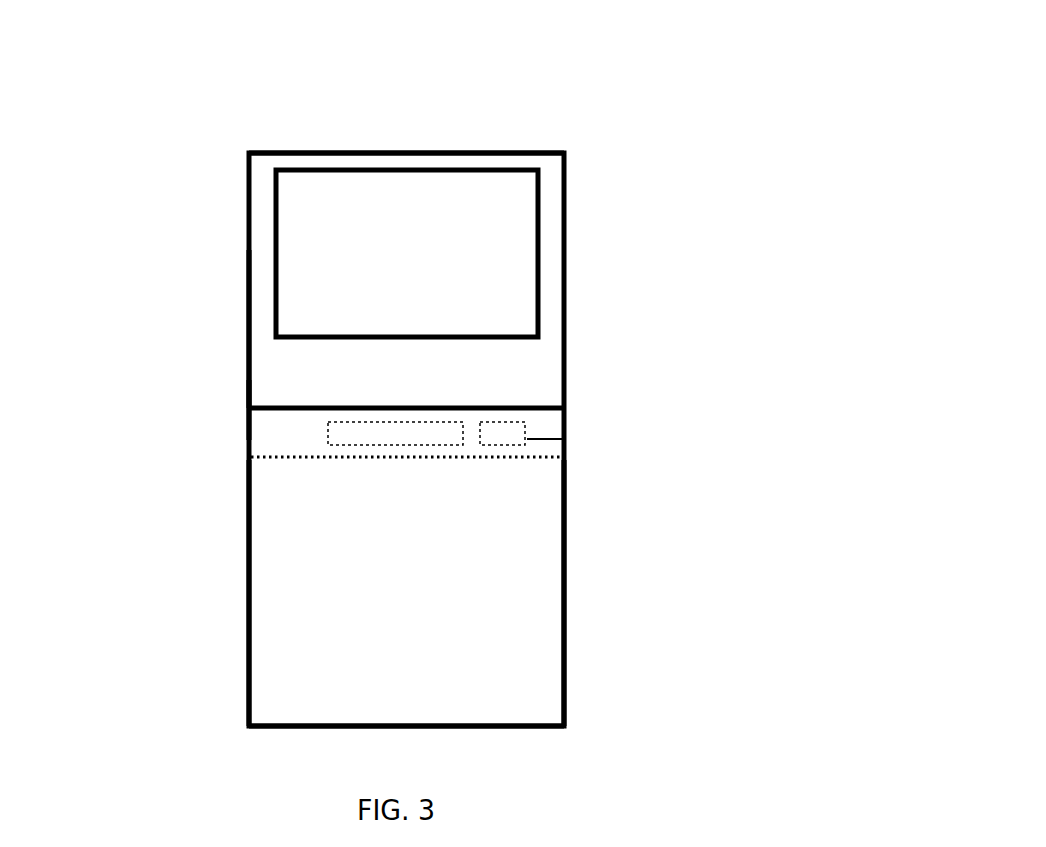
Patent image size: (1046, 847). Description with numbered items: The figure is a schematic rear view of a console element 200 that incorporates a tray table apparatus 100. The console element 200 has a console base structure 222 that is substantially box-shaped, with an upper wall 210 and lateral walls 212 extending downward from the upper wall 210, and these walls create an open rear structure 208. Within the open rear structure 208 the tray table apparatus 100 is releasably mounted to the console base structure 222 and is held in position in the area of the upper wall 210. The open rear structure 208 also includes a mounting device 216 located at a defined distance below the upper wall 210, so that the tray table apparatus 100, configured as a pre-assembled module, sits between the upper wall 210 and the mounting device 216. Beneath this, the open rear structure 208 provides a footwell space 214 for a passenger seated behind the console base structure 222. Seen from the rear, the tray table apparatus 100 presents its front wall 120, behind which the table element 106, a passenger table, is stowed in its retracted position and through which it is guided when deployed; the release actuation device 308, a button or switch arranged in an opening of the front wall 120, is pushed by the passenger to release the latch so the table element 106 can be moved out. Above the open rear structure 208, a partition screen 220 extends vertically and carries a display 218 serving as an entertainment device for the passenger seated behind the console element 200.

The console element 200 is at (207, 92).
The tray table apparatus 100 is at (226, 407).
The table element 106 is at (345, 432).
The front wall 120 is at (552, 439).
The open rear structure 208 is at (544, 556).
The upper wall 210 is at (525, 408).
The lateral walls 212 is at (248, 633).
The footwell space 214 is at (465, 633).
The mounting device 216 is at (229, 471).
The display 218 is at (502, 204).
The partition screen 220 is at (557, 265).
The console base structure 222 is at (221, 344).
The release actuation device 308 is at (523, 433).